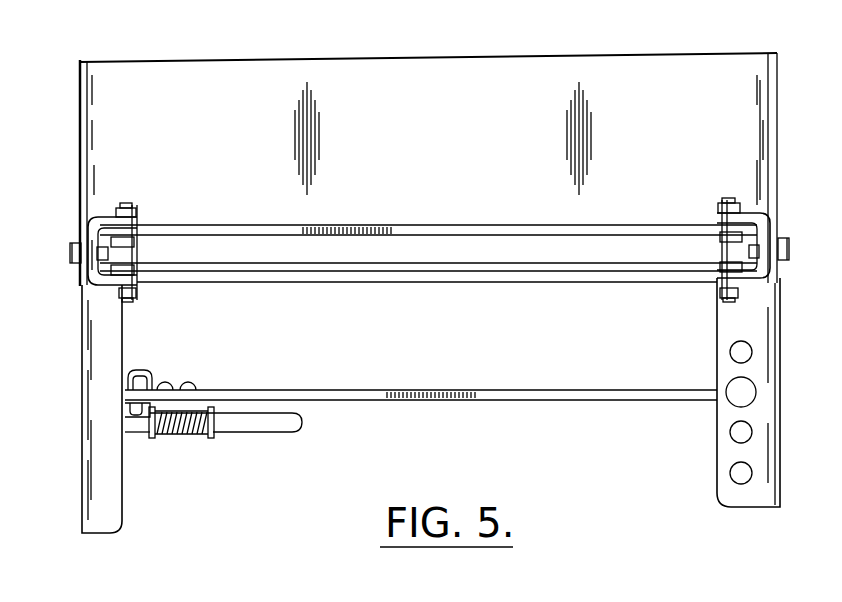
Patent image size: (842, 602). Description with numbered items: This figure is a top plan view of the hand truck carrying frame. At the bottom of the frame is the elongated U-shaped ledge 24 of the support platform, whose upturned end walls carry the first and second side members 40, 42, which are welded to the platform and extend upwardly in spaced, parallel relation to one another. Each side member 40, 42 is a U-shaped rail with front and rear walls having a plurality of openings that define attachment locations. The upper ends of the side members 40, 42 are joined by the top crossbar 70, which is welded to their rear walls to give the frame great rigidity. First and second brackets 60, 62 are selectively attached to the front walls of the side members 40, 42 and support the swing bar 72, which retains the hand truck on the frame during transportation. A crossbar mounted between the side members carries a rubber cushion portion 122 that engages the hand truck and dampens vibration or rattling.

The U-shaped ledge 24 is at (382, 69).
The first side member 40 is at (752, 213).
The second side member 42 is at (97, 218).
The first bracket 60 is at (716, 462).
The second bracket 62 is at (80, 501).
The top crossbar 70 is at (445, 227).
The swing bar 72 is at (368, 402).
The cushion portion 122 is at (528, 252).